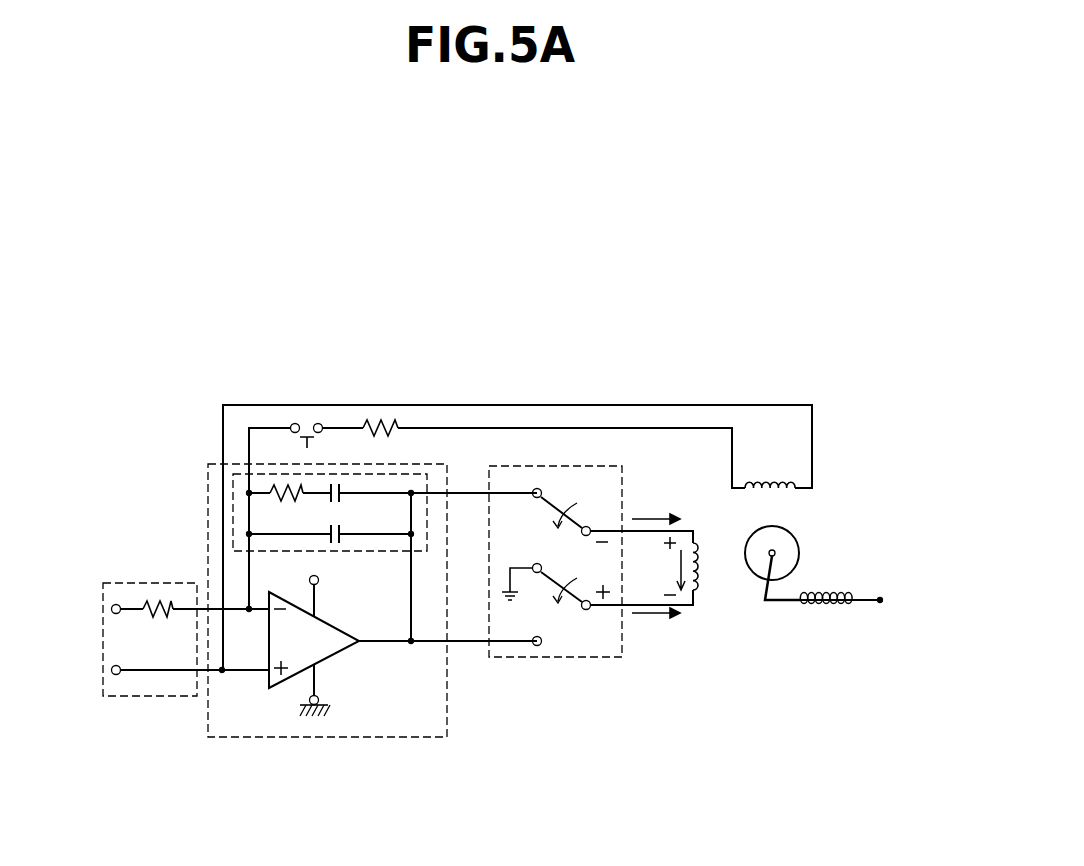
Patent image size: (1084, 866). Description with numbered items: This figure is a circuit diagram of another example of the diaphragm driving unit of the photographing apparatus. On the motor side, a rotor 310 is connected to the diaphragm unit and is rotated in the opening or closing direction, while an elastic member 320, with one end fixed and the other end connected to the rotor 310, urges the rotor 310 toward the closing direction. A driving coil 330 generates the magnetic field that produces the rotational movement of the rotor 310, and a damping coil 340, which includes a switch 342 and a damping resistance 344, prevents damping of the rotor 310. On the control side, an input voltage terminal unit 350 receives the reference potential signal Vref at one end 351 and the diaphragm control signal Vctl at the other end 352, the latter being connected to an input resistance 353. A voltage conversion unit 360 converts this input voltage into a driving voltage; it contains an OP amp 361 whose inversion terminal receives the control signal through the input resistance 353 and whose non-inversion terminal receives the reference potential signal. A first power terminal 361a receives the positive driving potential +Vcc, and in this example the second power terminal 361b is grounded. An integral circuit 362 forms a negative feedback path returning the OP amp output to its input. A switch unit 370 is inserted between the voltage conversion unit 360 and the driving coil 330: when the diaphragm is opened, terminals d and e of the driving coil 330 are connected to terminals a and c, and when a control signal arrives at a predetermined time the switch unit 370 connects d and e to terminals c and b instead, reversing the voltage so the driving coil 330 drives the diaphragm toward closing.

The rotor 310 is at (790, 525).
The elastic member 320 is at (855, 594).
The driving coil 330 is at (701, 594).
The damping coil 340 is at (786, 484).
The switch 342 is at (304, 424).
The damping resistance 344 is at (375, 422).
The input voltage terminal unit 350 is at (159, 663).
The one end of the input terminal unit 351 is at (117, 676).
The other end of the input terminal unit 352 is at (116, 602).
The input resistance 353 is at (160, 602).
The voltage conversion unit 360 is at (329, 641).
The OP amp 361 is at (338, 654).
The first power terminal 361a is at (317, 584).
The second power terminal 361b is at (363, 698).
The integral circuit 362 is at (233, 482).
The switch unit 370 is at (545, 660).